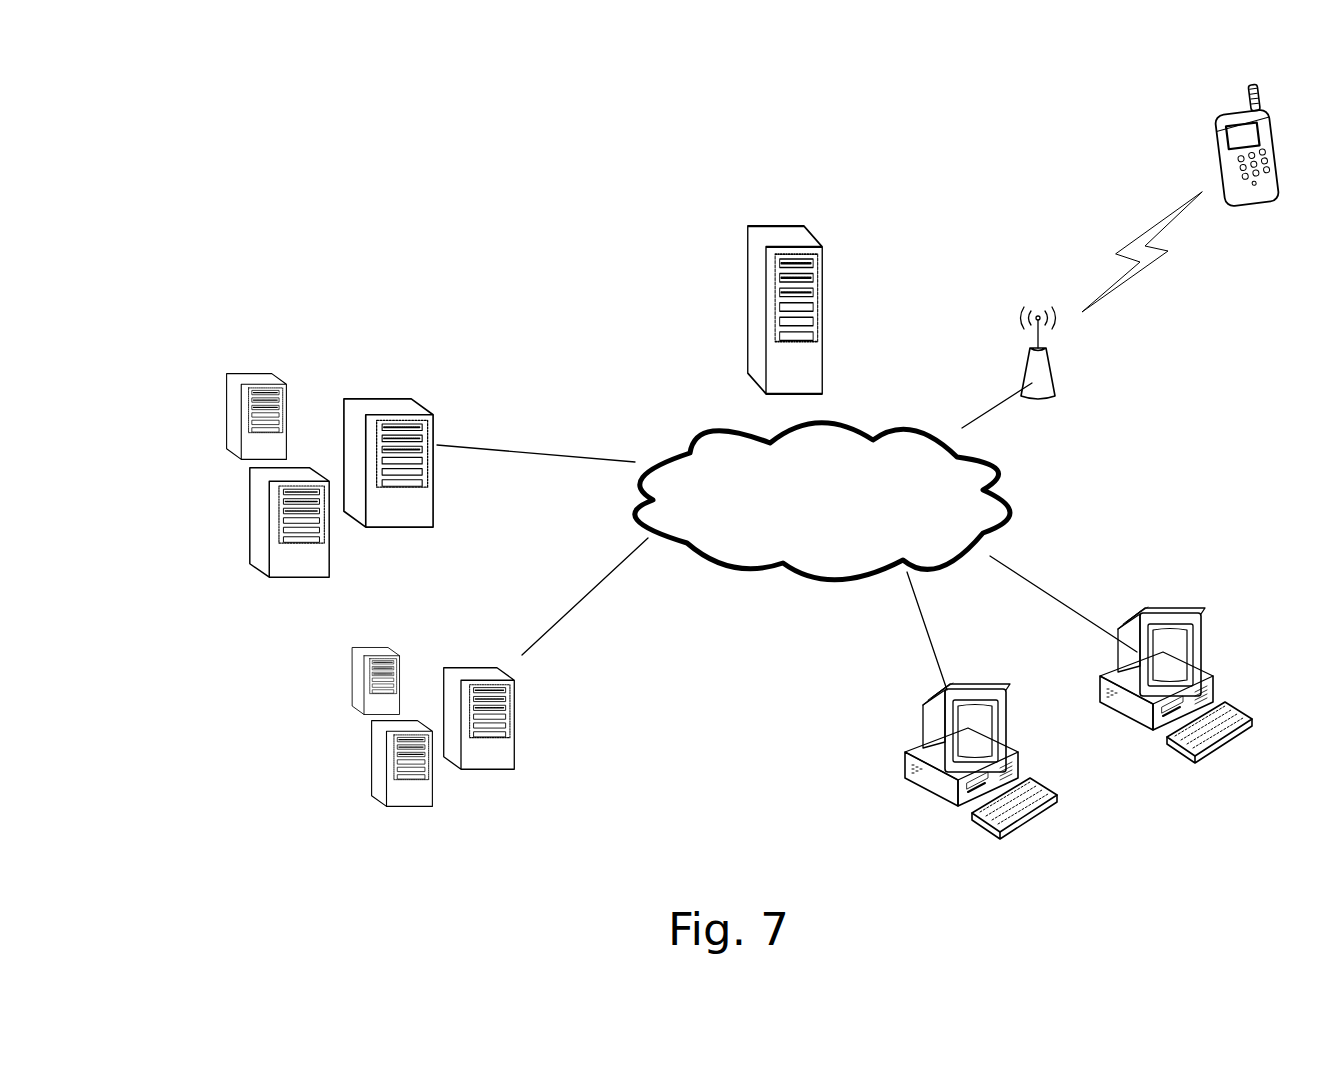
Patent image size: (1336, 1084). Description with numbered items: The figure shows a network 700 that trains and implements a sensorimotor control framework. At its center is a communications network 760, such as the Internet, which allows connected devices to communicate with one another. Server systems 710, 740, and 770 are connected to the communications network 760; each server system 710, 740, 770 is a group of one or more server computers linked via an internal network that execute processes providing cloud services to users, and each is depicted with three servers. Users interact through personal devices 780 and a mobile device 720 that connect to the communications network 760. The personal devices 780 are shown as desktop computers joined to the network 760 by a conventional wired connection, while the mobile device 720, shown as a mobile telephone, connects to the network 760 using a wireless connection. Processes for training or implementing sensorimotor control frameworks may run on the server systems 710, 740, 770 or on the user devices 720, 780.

The network 700 is at (660, 238).
The server system 710 is at (785, 236).
The mobile device 720 is at (1232, 118).
The server system 740 is at (430, 392).
The communications network 760 is at (785, 574).
The server system 770 is at (255, 705).
The personal device 780 is at (1050, 807).